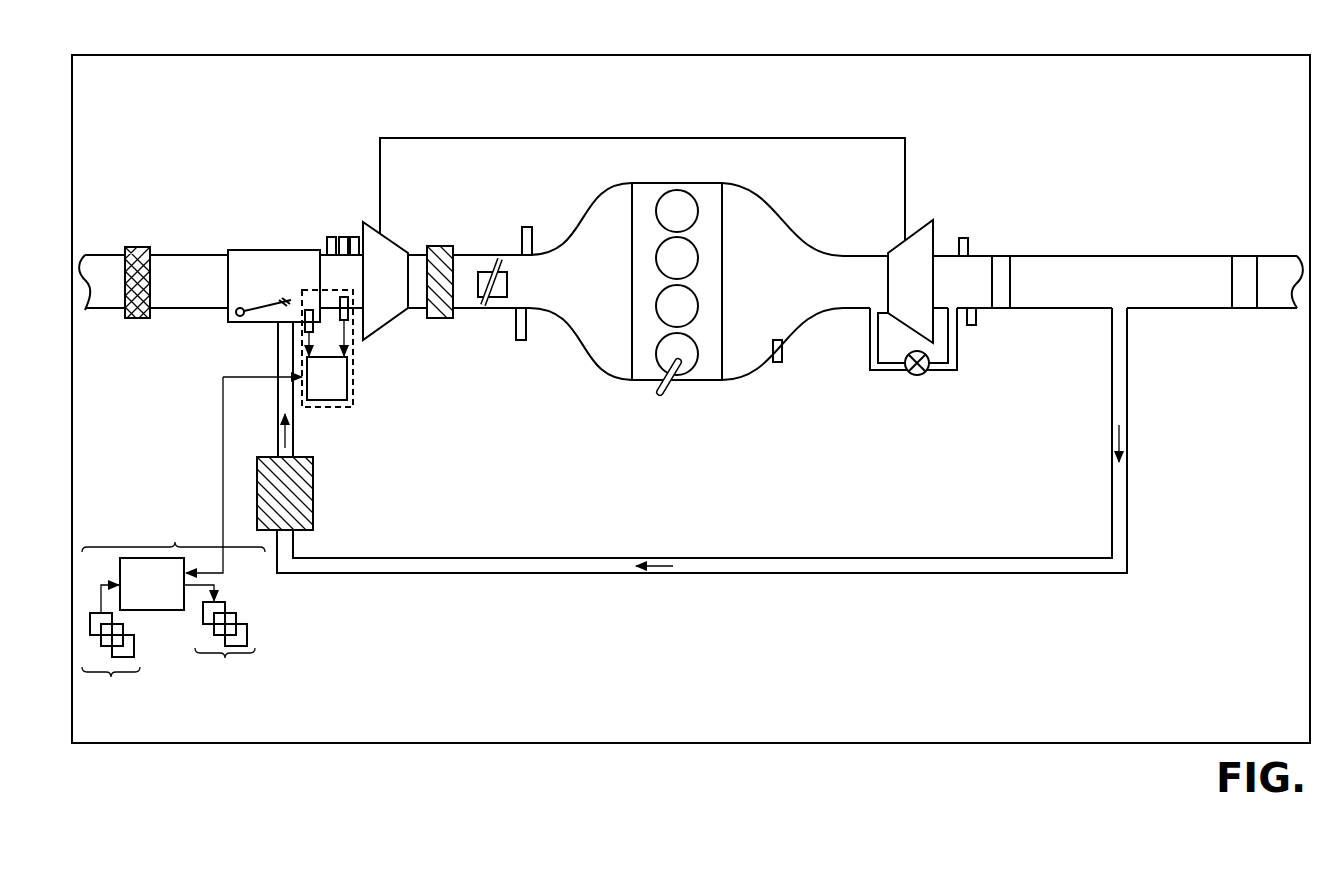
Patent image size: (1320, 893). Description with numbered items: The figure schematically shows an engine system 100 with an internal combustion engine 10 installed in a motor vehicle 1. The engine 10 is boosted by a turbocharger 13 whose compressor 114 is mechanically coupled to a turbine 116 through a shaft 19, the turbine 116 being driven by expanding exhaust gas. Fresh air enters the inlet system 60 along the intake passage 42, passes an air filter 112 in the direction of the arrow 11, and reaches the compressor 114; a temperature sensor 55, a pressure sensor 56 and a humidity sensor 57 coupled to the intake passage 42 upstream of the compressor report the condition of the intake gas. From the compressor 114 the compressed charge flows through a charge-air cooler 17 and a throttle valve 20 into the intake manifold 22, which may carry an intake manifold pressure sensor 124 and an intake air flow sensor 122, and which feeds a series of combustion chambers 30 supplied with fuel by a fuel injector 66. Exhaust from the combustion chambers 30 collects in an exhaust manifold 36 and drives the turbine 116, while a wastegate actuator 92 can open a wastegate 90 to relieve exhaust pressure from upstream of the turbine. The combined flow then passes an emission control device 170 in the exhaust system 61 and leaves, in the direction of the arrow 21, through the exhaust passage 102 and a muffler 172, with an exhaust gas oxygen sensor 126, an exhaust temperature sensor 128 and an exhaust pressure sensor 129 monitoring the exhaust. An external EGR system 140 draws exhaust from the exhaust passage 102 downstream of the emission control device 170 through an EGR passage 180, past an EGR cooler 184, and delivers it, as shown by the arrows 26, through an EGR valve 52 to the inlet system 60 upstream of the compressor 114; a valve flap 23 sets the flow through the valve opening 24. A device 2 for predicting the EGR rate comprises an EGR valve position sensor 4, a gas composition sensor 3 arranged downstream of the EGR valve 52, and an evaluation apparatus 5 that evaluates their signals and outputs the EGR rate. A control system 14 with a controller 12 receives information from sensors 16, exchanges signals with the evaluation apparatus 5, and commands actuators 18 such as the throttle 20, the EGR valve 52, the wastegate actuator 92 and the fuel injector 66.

The motor vehicle 1 is at (862, 55).
The engine system 100 is at (1181, 115).
The internal combustion engine 10 is at (723, 266).
The arrow 11 is at (167, 283).
The controller 12 is at (171, 493).
The turbocharger 13 is at (560, 126).
The control system 14 is at (173, 512).
The sensors 16 is at (116, 653).
The charge-air cooler 17 is at (440, 246).
The actuators 18 is at (228, 647).
The shaft 19 is at (618, 138).
The throttle valve 20 is at (502, 296).
The arrow 21 is at (1138, 283).
The intake manifold 22 is at (579, 281).
The valve flap 23 is at (270, 306).
The valve opening 24 is at (278, 325).
The arrows 26 is at (294, 428).
The combustion chambers 30 is at (698, 205).
The exhaust manifold 36 is at (805, 281).
The intake passage 42 is at (114, 311).
The EGR valve 52 is at (271, 250).
The temperature sensor 55 is at (332, 236).
The pressure sensor 56 is at (344, 236).
The humidity sensor 57 is at (354, 236).
The inlet system 60 is at (185, 383).
The exhaust system 61 is at (1096, 221).
The fuel injector 66 is at (672, 385).
The wastegate 90 is at (870, 371).
The wastegate actuator 92 is at (914, 375).
The exhaust passage 102 is at (1045, 310).
The air filter 112 is at (141, 247).
The compressor 114 is at (385, 281).
The turbine 116 is at (910, 281).
The intake air flow sensor 122 is at (516, 326).
The intake manifold pressure sensor 124 is at (522, 233).
The exhaust gas oxygen sensor 126 is at (782, 344).
The exhaust temperature sensor 128 is at (971, 326).
The exhaust pressure sensor 129 is at (964, 238).
The EGR system 140 is at (598, 613).
The emission control device 170 is at (1005, 256).
The muffler 172 is at (1244, 256).
The EGR passage 180 is at (858, 575).
The EGR cooler 184 is at (313, 492).
The device 2 is at (343, 407).
The gas composition sensor 3 is at (348, 322).
The EGR valve position sensor 4 is at (305, 325).
The evaluation apparatus 5 is at (285, 378).